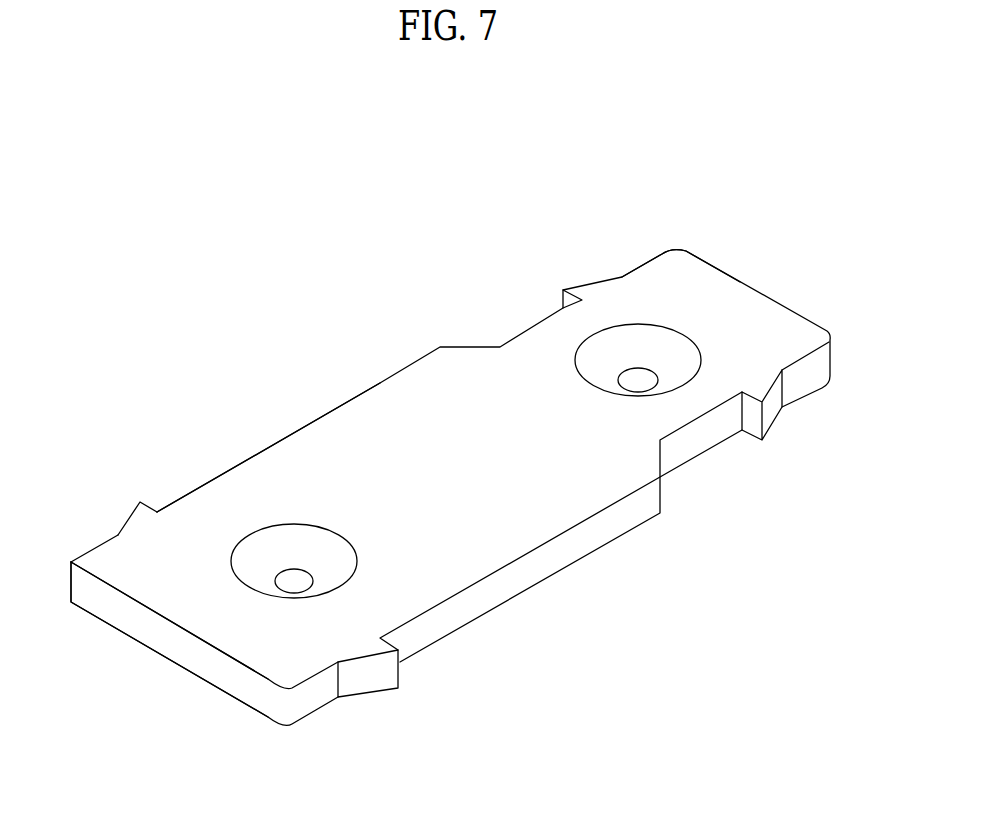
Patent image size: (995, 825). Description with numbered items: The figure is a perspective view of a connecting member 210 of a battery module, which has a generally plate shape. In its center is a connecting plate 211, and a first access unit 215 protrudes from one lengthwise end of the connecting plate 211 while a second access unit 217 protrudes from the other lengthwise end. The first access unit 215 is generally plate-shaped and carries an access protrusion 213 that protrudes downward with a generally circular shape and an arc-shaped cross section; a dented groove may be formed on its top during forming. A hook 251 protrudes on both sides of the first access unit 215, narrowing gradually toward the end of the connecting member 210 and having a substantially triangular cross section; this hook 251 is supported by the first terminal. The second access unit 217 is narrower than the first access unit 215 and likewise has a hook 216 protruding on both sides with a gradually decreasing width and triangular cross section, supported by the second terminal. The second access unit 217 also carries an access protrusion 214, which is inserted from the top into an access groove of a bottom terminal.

The connecting member 210 is at (378, 358).
The connecting plate 211 is at (291, 445).
The access protrusion 213 is at (343, 568).
The access protrusion 214 is at (675, 377).
The first access unit 215 is at (192, 623).
The hook 216 is at (578, 290).
The second access unit 217 is at (746, 290).
The hook 251 is at (137, 507).